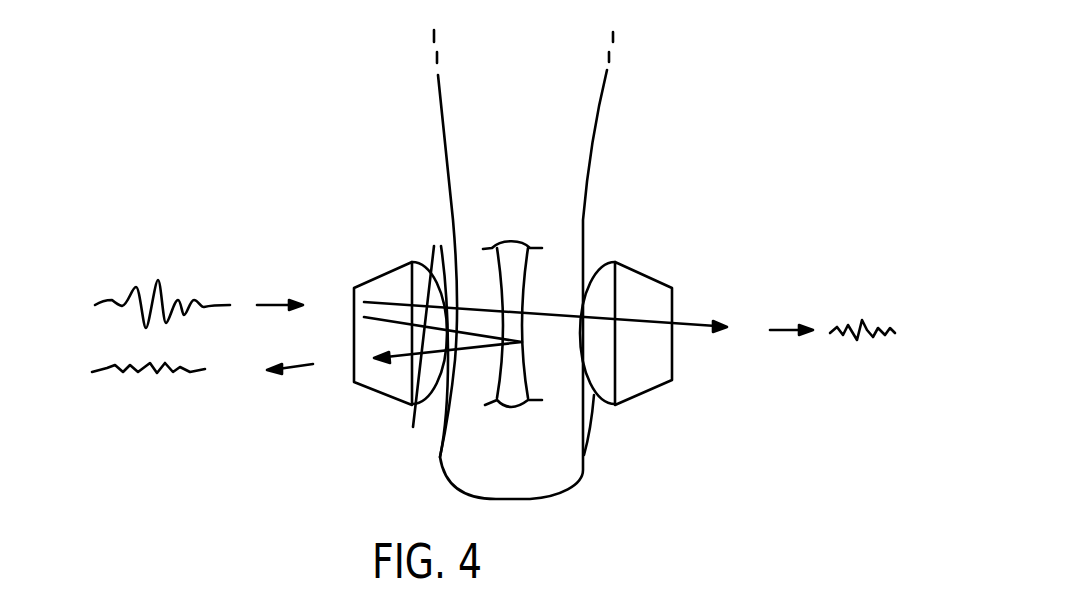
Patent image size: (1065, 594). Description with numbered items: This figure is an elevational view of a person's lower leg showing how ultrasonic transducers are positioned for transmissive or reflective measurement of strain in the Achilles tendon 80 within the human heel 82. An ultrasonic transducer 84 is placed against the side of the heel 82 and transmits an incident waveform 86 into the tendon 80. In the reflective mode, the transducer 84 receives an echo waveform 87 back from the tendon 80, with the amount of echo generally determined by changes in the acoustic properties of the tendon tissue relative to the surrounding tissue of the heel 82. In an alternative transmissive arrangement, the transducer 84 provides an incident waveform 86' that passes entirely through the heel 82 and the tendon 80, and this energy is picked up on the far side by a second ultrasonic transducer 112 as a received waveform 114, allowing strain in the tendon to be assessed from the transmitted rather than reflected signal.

The Achilles tendon 80 is at (520, 277).
The human heel 82 is at (523, 462).
The ultrasonic transducer 84 is at (383, 275).
The incident waveform 86 is at (271, 337).
The incident waveform 86' is at (600, 265).
The echo waveform 87 is at (152, 375).
The second ultrasonic transducer 112 is at (643, 290).
The received waveform 114 is at (692, 323).